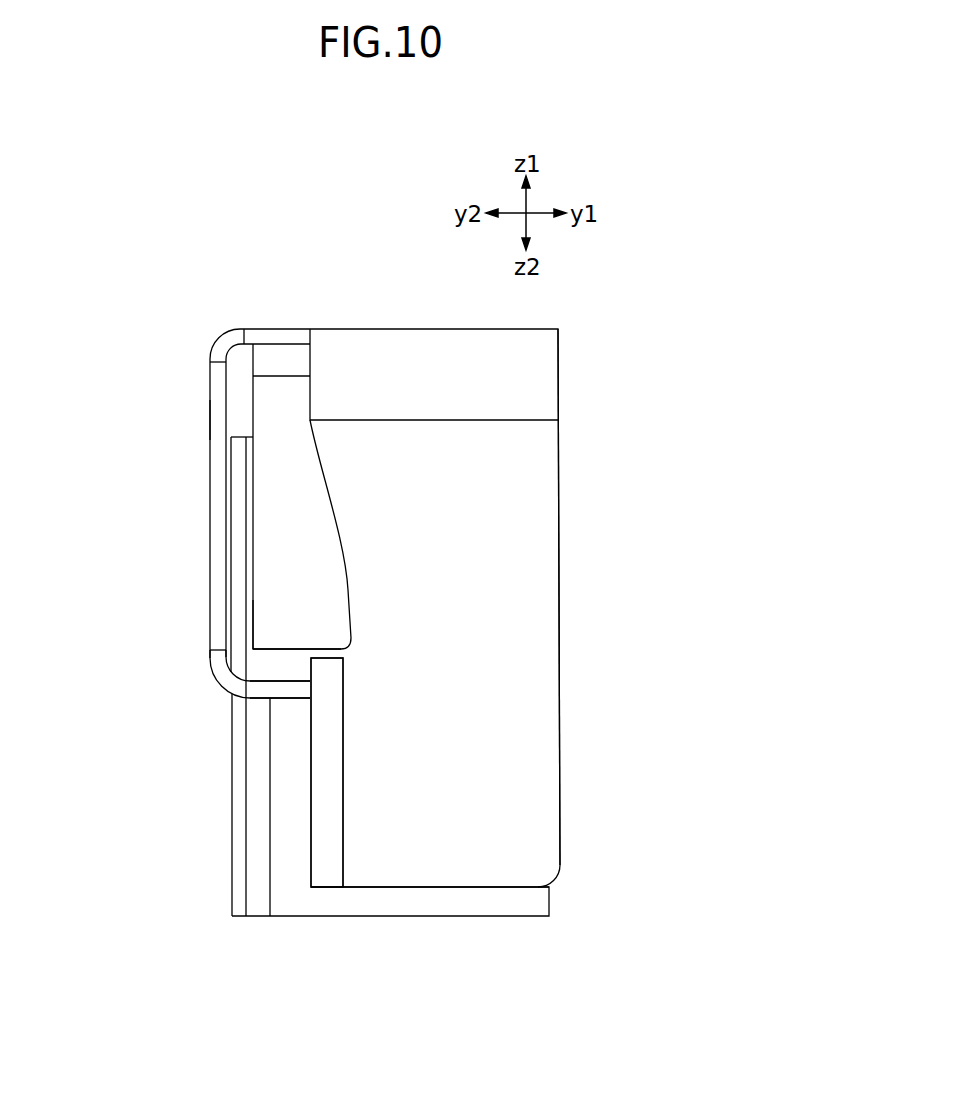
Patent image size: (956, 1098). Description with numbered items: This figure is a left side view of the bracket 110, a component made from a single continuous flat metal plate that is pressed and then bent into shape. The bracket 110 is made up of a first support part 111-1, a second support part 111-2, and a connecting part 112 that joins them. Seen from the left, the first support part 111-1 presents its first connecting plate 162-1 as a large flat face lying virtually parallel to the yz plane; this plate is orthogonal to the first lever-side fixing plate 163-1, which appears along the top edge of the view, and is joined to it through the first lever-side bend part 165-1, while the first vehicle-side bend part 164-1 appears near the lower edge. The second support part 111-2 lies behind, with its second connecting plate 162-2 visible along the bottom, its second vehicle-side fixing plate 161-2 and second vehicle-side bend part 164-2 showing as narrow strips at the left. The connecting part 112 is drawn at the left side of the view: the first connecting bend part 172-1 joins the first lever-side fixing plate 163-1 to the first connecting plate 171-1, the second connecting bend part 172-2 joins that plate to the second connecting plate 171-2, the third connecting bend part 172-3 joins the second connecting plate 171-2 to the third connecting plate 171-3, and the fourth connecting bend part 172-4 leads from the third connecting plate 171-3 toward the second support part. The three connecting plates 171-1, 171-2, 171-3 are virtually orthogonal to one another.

The bracket 110 is at (230, 244).
The first support part 111-1 is at (606, 597).
The second support part 111-2 is at (510, 944).
The connecting part 112 is at (141, 419).
The second vehicle-side fixing plate 161-2 is at (242, 832).
The first connecting plate 162-1 is at (523, 722).
The second connecting plate 162-2 is at (420, 905).
The first lever-side fixing plate 163-1 is at (287, 333).
The first vehicle-side bend part 164-1 is at (327, 851).
The second vehicle-side bend part 164-2 is at (262, 903).
The first lever-side bend part 165-1 is at (440, 362).
The first connecting plate 171-1 is at (215, 472).
The second connecting plate 171-2 is at (282, 688).
The third connecting plate 171-3 is at (282, 522).
The first connecting bend part 172-1 is at (225, 338).
The second connecting bend part 172-2 is at (223, 680).
The third connecting bend part 172-3 is at (280, 660).
The fourth connecting bend part 172-4 is at (279, 364).